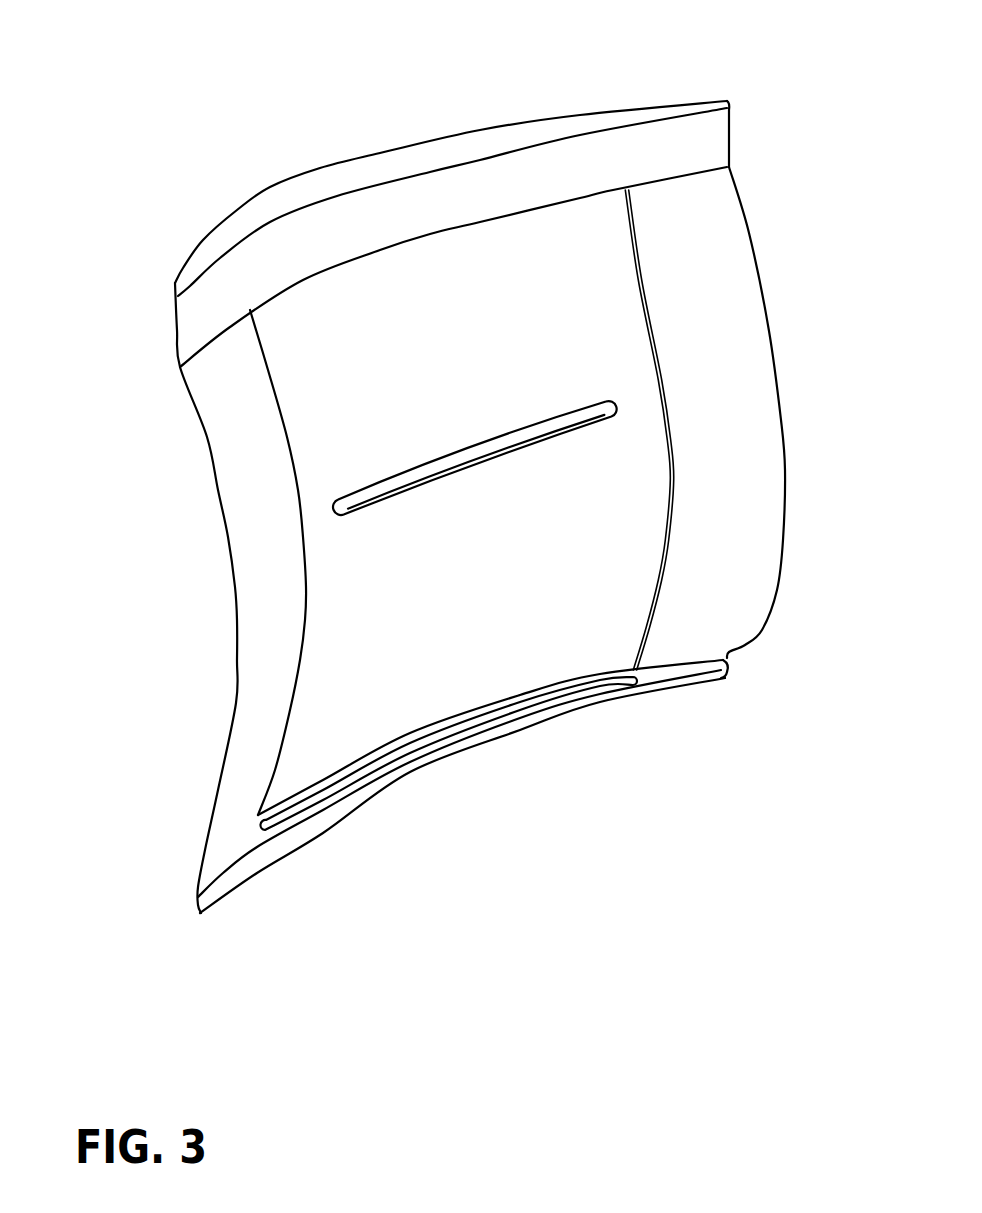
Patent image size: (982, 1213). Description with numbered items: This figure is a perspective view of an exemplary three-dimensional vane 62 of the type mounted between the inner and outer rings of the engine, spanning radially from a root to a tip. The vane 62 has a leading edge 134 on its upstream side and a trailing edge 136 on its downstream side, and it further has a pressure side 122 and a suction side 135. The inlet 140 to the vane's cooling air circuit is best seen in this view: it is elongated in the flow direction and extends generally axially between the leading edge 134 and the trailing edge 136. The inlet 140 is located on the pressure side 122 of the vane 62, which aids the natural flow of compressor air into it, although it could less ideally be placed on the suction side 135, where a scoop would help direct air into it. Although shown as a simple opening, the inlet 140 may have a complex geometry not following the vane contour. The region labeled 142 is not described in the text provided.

The vane 62 is at (553, 81).
The pressure side 122 is at (440, 379).
The leading edge 134 is at (217, 492).
The suction side 135 is at (241, 208).
The trailing edge 136 is at (749, 232).
The inlet 140 is at (594, 419).
The second surface portion 142 is at (633, 502).